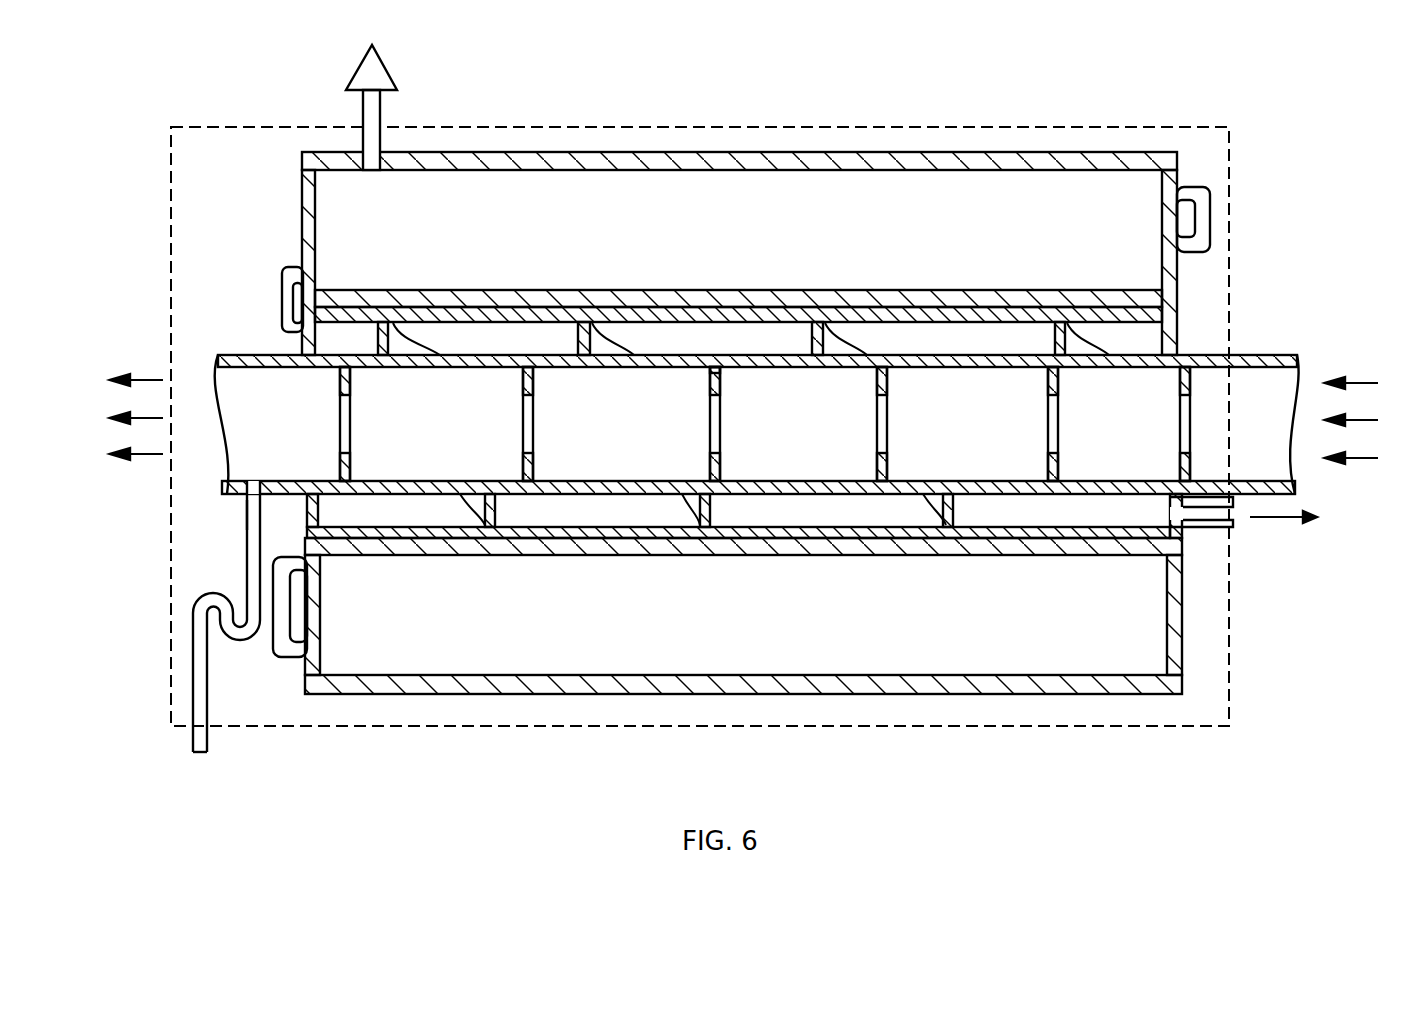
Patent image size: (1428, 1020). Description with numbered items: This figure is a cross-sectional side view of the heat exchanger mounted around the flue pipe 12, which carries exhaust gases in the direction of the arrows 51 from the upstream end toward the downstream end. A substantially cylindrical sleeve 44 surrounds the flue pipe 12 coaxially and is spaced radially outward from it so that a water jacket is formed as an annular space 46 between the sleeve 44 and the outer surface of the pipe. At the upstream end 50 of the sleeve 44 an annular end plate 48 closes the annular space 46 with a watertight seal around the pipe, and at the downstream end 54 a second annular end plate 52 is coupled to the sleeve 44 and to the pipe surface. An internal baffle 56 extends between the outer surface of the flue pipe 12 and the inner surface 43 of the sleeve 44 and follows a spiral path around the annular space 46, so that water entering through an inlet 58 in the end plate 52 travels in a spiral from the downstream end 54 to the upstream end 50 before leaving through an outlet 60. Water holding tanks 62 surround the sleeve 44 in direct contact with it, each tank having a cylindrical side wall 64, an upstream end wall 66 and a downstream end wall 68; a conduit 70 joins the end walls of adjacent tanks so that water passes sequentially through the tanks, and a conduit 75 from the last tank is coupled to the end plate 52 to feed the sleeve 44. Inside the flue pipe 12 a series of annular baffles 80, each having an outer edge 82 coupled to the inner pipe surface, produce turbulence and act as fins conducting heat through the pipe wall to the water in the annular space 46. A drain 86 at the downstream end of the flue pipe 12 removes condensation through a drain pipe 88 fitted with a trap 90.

The flue pipe 12 is at (1285, 356).
The inner surface of sleeve 43 is at (440, 345).
The sleeve 44 is at (1097, 323).
The annular space 46 is at (888, 338).
The annular end plate 48 is at (1178, 327).
The upstream end 50 is at (1187, 537).
The arrows 51 is at (147, 380).
The end plate 52 is at (302, 345).
The downstream end 54 is at (296, 530).
The internal baffle 56 is at (615, 342).
The inlet 58 is at (335, 330).
The outlet 60 is at (1233, 525).
The water holding tank 62 is at (795, 611).
The cylindrical side wall 64 is at (753, 200).
The upstream end wall 66 is at (1178, 177).
The downstream end wall 68 is at (302, 220).
The conduit 70 is at (300, 657).
The conduit 75 is at (282, 295).
The baffle 80 is at (522, 428).
The outer edge 82 is at (707, 368).
The drain 86 is at (255, 481).
The drain pipe 88 is at (243, 507).
The trap 90 is at (243, 638).